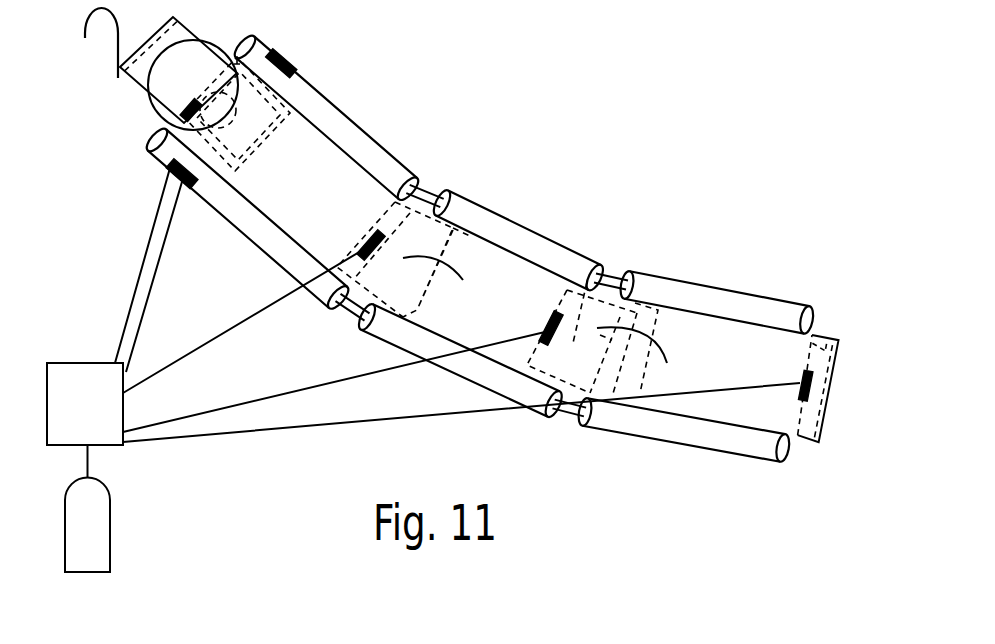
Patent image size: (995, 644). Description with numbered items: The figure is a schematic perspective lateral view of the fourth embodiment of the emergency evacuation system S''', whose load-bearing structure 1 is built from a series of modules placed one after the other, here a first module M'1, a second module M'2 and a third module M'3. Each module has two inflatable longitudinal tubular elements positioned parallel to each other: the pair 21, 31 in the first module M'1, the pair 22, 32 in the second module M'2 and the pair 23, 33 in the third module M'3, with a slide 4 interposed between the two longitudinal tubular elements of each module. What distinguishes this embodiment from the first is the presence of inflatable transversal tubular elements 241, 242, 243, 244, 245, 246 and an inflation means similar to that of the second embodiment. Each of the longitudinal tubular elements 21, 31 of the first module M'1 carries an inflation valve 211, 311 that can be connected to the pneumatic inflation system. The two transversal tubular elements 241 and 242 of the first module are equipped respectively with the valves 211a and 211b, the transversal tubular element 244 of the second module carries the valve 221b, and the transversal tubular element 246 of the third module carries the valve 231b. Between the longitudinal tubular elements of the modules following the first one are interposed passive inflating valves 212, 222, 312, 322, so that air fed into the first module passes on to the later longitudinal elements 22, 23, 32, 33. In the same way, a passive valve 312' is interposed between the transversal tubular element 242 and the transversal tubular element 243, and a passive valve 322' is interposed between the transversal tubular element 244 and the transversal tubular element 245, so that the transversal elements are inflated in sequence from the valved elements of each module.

The load-bearing structure 1 is at (523, 103).
The slide 4 is at (830, 383).
The inflatable longitudinal tubular element 21 is at (393, 128).
The inflatable longitudinal tubular element 22 is at (560, 242).
The inflatable longitudinal tubular element 23 is at (788, 303).
The inflatable longitudinal tubular element 31 is at (287, 273).
The inflatable longitudinal tubular element 32 is at (497, 392).
The inflatable longitudinal tubular element 33 is at (747, 457).
The inflation valve 211 is at (273, 55).
The valve 211a is at (192, 112).
The valve 211b is at (368, 240).
The passive inflating valve 212 is at (438, 187).
The valve 221b is at (547, 317).
The passive inflating valve 222 is at (617, 268).
The valve 231b is at (800, 382).
The inflatable transversal tubular element 241 is at (280, 115).
The inflatable transversal tubular element 242 is at (388, 213).
The inflatable transversal tubular element 243 is at (443, 252).
The inflatable transversal tubular element 244 is at (535, 350).
The inflatable transversal tubular element 245 is at (653, 323).
The inflatable transversal tubular element 246 is at (805, 355).
The inflation valve 311 is at (167, 167).
The passive inflating valve 312 is at (316, 326).
The passive valve 312' is at (442, 282).
The passive inflating valve 322 is at (548, 437).
The passive valve 322' is at (646, 358).
The first module M'1 is at (241, 163).
The second module M'2 is at (488, 292).
The third module M'3 is at (718, 365).
The emergency evacuation system S''' is at (451, 289).